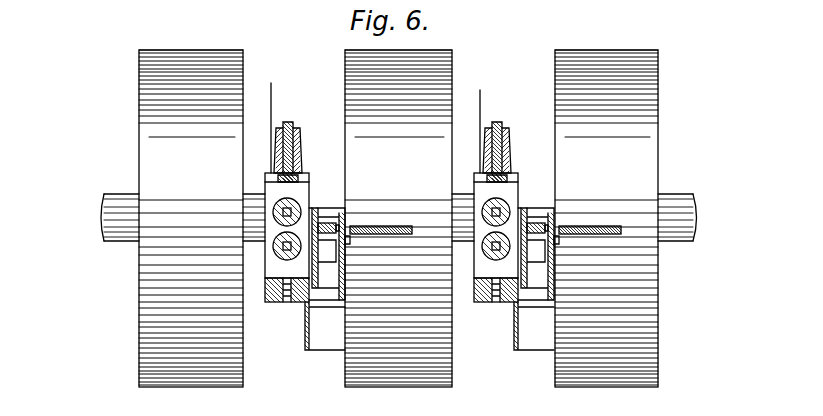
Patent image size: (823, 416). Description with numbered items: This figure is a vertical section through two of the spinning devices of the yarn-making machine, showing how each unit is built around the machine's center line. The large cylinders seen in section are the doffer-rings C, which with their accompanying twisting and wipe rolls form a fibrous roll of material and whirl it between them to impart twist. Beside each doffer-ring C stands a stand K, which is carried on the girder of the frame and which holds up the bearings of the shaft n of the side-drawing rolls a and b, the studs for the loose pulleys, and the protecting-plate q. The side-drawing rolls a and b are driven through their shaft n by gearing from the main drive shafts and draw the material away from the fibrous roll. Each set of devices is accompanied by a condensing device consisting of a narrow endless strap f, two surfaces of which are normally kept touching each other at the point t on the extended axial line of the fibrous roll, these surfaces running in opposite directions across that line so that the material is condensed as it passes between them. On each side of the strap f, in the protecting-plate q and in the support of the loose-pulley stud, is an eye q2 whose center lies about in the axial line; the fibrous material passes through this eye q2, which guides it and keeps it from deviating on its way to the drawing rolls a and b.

The doffer-ring C is at (398, 218).
The side-drawing roll a is at (271, 278).
The side-drawing roll b is at (297, 193).
The shaft of the drawing-rolls n is at (281, 249).
The stand K is at (300, 276).
The condensing strap f is at (321, 222).
The point where the strap surfaces touch t is at (335, 220).
The protecting-plate q is at (349, 216).
The eye q2 is at (350, 243).